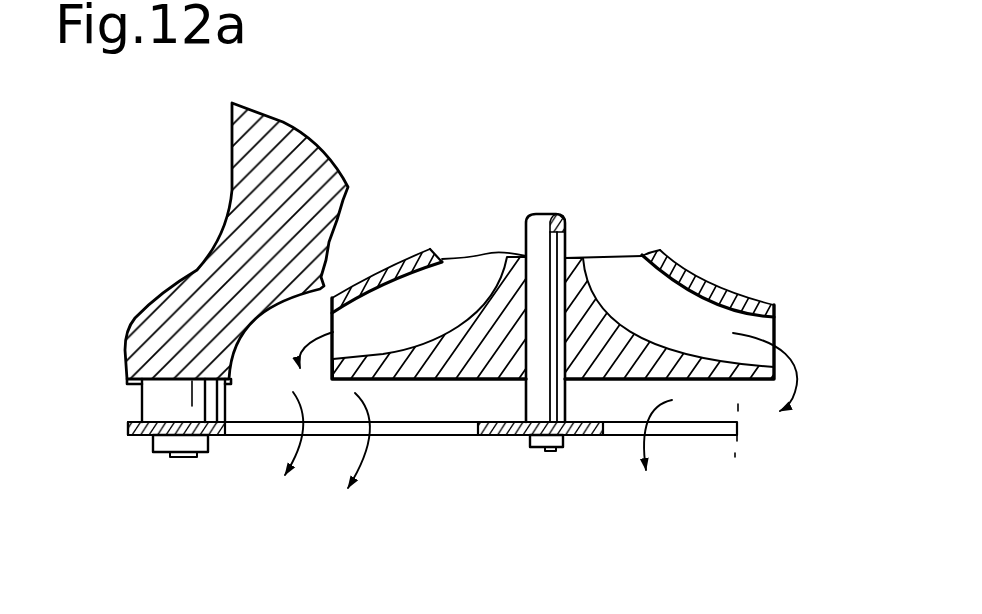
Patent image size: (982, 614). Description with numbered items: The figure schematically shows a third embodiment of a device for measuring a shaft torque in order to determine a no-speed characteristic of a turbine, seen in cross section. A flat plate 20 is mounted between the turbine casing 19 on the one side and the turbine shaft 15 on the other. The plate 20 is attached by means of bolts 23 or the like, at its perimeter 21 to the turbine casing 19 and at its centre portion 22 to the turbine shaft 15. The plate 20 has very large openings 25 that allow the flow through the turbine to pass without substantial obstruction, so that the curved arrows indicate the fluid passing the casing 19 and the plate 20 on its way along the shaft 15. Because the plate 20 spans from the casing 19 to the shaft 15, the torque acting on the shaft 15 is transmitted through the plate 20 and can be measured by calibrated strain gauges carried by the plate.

The turbine shaft 15 is at (567, 232).
The turbine casing 19 is at (288, 150).
The flat plate 20 is at (140, 437).
The perimeter 21 is at (227, 437).
The centre portion 22 is at (582, 436).
The bolts 23 is at (195, 450).
The openings 25 is at (418, 440).